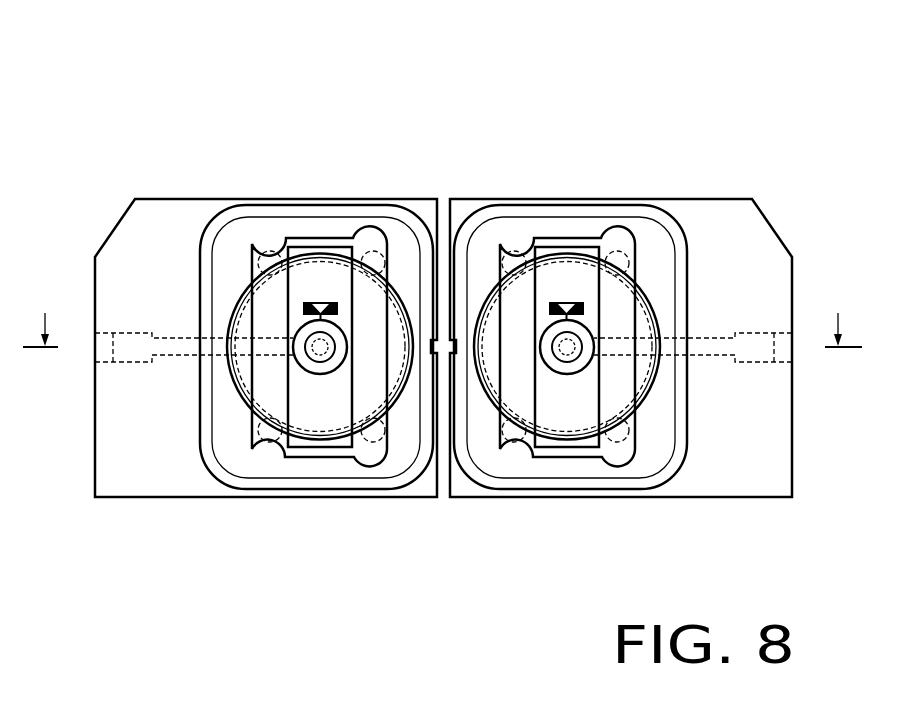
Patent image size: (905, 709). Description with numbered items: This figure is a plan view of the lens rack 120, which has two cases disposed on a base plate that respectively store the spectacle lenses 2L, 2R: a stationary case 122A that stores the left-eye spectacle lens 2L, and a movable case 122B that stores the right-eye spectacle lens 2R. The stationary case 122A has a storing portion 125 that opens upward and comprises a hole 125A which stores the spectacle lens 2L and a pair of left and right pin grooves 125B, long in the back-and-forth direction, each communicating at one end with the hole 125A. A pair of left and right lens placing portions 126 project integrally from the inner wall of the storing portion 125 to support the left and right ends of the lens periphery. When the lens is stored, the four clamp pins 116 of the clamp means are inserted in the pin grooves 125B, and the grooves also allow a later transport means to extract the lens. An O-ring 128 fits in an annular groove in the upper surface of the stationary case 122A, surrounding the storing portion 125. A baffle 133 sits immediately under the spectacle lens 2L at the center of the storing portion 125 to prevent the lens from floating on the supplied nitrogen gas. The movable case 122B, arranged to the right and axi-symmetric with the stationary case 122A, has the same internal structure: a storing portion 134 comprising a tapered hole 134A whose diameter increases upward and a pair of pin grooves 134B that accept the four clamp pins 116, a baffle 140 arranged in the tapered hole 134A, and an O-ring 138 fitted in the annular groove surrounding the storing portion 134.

The lens rack 120 is at (498, 36).
The stationary case 122A is at (161, 189).
The movable case 122B is at (726, 191).
The storing portion 125 is at (339, 256).
The hole 125A is at (311, 278).
The pin grooves 125B is at (268, 242).
The O-ring 128 is at (227, 216).
The storing portion 134 is at (565, 256).
The tapered hole 134A is at (555, 280).
The pin grooves 134B is at (515, 237).
The O-ring 138 is at (672, 462).
The clamp pins 116 is at (258, 266).
The lens placing portions 126 is at (245, 372).
The baffle 133 is at (320, 362).
The baffle 140 is at (568, 363).
The left-eye spectacle lens 2L is at (278, 456).
The right-eye spectacle lens 2R is at (503, 437).